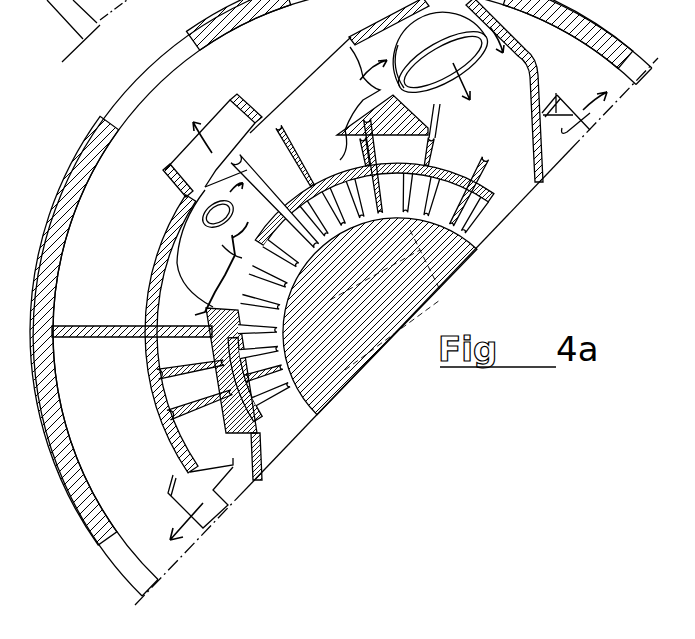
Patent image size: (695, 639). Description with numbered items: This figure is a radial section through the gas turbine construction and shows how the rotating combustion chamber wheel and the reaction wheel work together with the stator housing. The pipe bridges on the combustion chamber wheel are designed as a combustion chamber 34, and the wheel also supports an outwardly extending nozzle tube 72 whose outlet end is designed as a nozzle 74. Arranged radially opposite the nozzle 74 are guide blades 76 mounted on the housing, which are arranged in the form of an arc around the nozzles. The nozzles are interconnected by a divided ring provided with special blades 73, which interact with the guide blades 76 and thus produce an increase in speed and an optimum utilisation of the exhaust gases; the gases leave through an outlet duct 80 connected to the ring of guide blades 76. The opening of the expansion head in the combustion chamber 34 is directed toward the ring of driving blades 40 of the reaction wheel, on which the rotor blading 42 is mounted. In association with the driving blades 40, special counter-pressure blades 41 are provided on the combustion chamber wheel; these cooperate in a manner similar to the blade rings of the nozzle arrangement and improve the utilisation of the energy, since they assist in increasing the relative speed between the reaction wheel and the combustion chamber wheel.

The combustion chamber 34 is at (503, 120).
The rotor blading 42 is at (430, 143).
The outlet duct 80 is at (237, 138).
The nozzle 74 is at (200, 213).
The guide blades 76 is at (156, 327).
The special blades 73 is at (160, 373).
The nozzle tube 72 is at (234, 305).
The counter-pressure blades 41 is at (235, 404).
The driving blades 40 is at (251, 440).